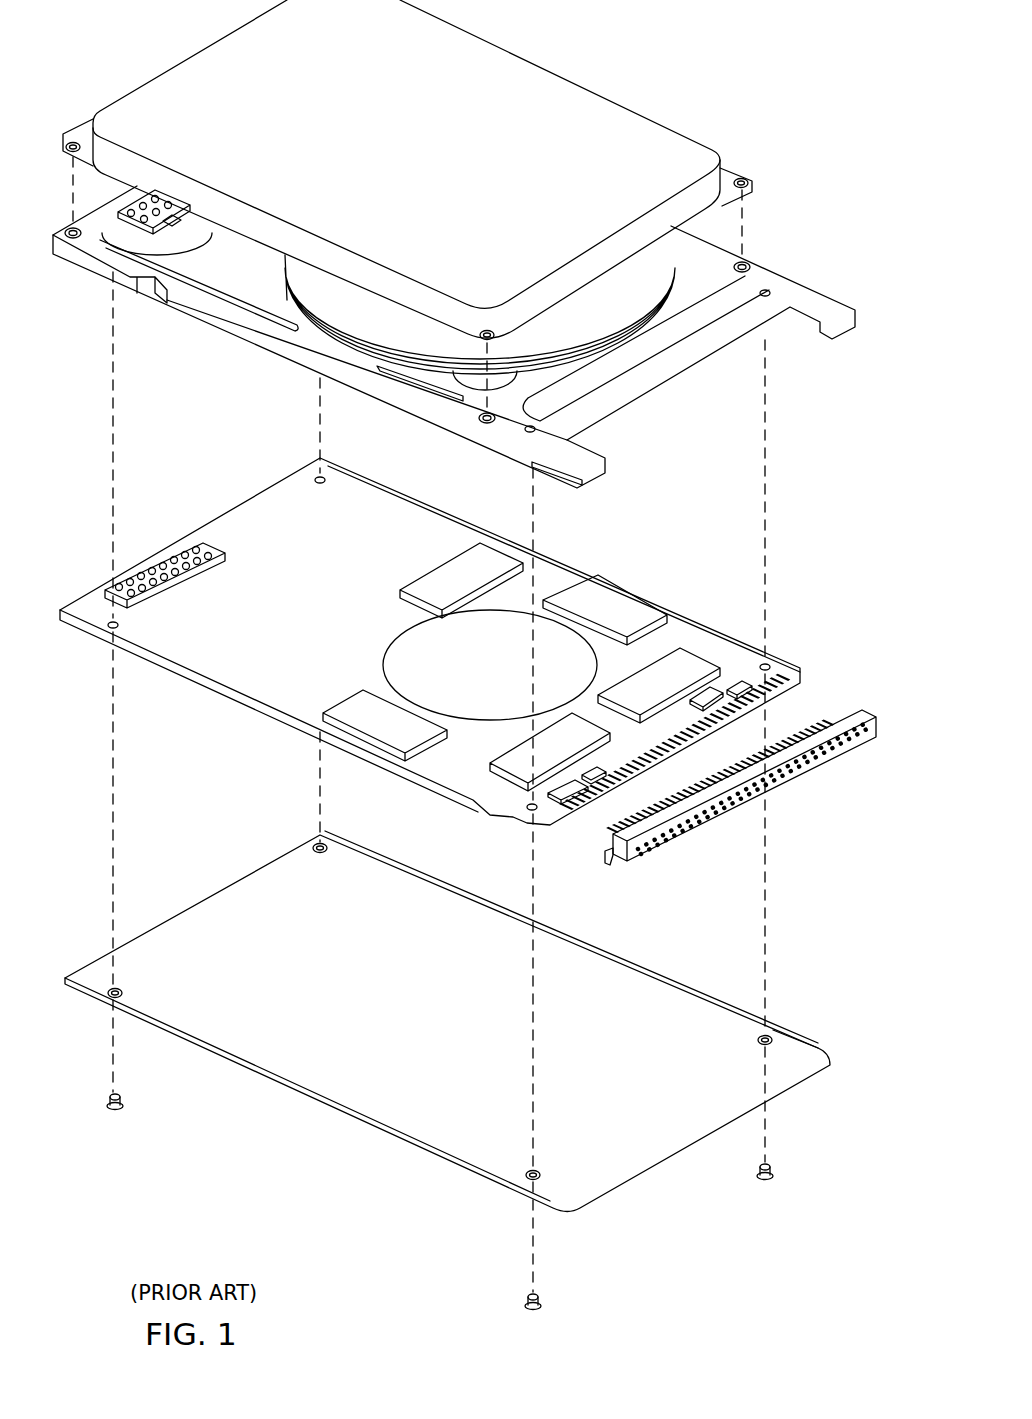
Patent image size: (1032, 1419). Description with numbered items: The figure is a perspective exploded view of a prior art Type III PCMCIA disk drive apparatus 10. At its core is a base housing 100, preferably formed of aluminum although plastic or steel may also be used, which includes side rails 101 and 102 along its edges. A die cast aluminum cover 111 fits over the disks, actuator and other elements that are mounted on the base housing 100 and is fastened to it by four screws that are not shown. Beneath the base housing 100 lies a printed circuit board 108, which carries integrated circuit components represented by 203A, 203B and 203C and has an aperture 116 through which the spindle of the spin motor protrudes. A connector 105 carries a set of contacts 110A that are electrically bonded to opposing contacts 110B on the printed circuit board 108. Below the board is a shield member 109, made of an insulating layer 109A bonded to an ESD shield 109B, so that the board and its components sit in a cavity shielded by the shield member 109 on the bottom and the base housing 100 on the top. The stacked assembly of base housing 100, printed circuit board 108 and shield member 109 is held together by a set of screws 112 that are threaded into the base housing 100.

The disk drive apparatus 10 is at (856, 266).
The base housing 100 is at (634, 410).
The side rail 101 is at (240, 338).
The side rail 102 is at (748, 262).
The connector 105 is at (810, 776).
The printed circuit board 108 is at (615, 583).
The shield member 109 is at (317, 1097).
The insulating layer 109A is at (330, 985).
The ESD shield 109B is at (813, 1054).
The contacts 110A is at (807, 715).
The contacts 110B is at (618, 800).
The cover 111 is at (591, 93).
The screws 112 is at (125, 1101).
The aperture 116 is at (490, 614).
The integrated circuit components 203A is at (712, 697).
The integrated circuit components 203B is at (577, 722).
The integrated circuit components 203C is at (497, 563).